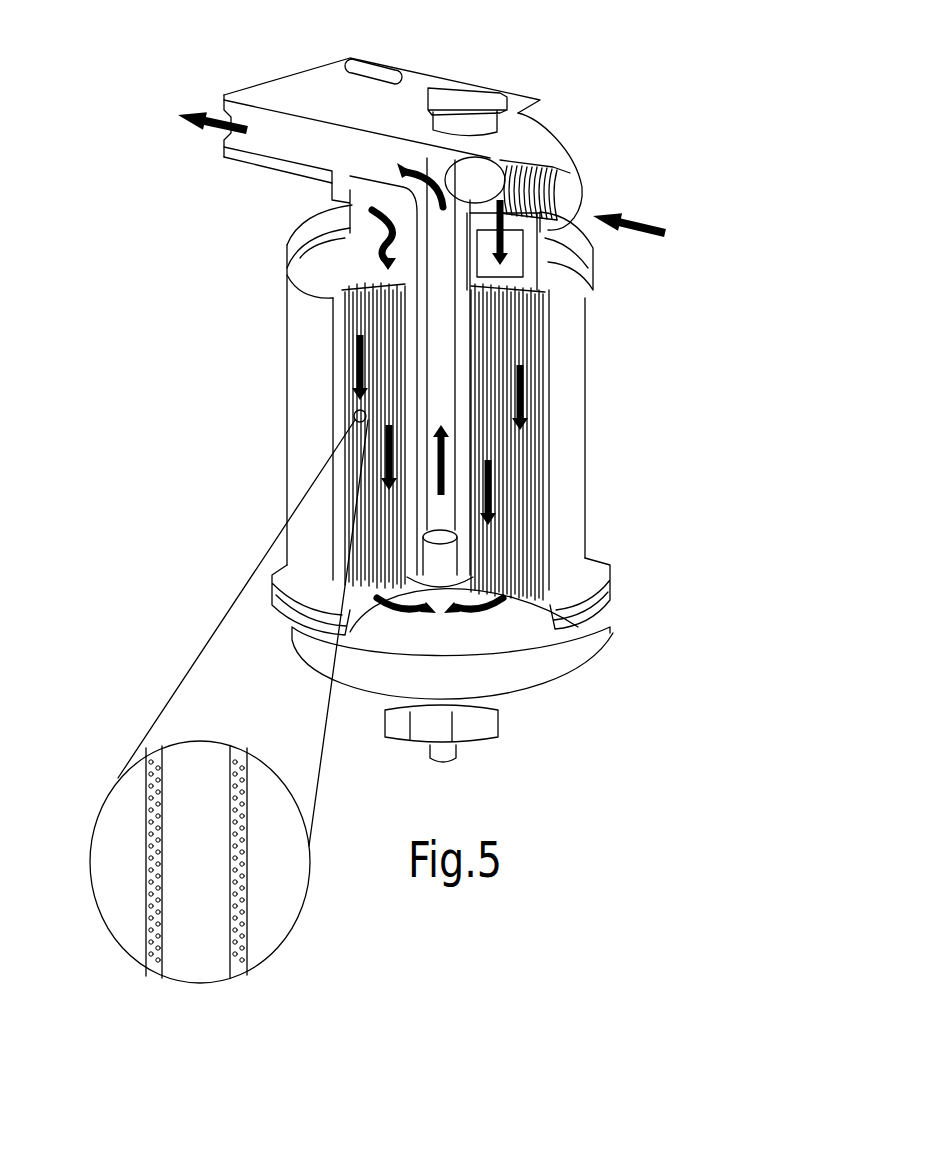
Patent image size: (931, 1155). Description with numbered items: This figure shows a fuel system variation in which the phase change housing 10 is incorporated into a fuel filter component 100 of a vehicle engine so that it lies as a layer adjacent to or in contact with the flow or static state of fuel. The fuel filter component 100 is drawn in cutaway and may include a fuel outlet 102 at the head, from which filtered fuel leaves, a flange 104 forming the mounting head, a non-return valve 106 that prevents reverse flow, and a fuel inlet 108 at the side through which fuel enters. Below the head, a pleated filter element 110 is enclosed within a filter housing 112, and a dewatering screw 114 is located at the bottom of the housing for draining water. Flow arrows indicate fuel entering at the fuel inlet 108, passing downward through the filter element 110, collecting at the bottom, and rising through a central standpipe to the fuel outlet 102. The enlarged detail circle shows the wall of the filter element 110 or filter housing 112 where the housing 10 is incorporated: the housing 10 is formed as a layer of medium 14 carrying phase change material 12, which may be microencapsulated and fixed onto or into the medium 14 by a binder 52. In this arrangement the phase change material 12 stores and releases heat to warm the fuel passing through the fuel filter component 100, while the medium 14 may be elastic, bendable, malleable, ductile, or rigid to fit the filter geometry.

The fuel filter component 100 is at (690, 62).
The fuel outlet 102 is at (213, 133).
The flange 104 is at (370, 67).
The non-return valve 106 is at (478, 173).
The fuel inlet 108 is at (627, 227).
The filter element 110 is at (507, 347).
The filter housing 112 is at (562, 451).
The dewatering screw 114 is at (476, 722).
The housing 10 is at (229, 696).
The medium 14 is at (148, 810).
The phase change material 12 is at (150, 838).
The binder 52 is at (148, 910).